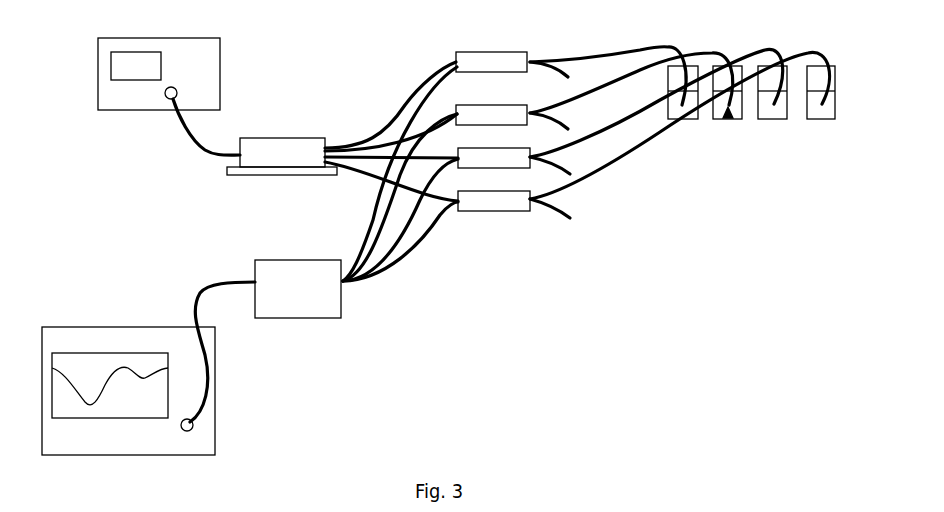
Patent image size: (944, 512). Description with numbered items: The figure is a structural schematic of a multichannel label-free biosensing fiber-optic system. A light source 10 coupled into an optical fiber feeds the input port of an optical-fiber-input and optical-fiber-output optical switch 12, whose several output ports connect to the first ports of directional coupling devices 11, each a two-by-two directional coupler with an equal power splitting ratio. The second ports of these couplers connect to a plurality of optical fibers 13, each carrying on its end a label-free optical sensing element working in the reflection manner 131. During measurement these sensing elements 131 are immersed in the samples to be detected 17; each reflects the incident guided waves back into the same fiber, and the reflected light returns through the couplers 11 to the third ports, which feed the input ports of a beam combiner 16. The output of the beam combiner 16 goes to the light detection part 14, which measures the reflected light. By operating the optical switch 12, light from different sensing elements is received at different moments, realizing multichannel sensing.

The light source 10 is at (222, 85).
The directional coupling device 11 is at (502, 52).
The optical-fiber-input and optical-fiber-output optical switch 12 is at (272, 142).
The optical fibers 13 is at (717, 55).
The label-free optical sensing element working in the reflection manner 131 is at (733, 119).
The light detection part 14 is at (212, 400).
The beam combiner 16 is at (273, 262).
The samples to be detected 17 is at (770, 113).